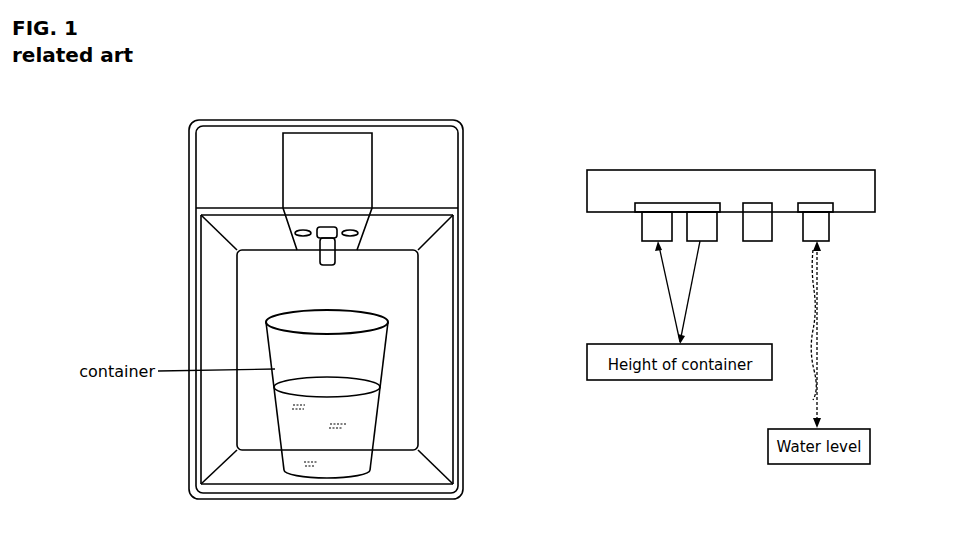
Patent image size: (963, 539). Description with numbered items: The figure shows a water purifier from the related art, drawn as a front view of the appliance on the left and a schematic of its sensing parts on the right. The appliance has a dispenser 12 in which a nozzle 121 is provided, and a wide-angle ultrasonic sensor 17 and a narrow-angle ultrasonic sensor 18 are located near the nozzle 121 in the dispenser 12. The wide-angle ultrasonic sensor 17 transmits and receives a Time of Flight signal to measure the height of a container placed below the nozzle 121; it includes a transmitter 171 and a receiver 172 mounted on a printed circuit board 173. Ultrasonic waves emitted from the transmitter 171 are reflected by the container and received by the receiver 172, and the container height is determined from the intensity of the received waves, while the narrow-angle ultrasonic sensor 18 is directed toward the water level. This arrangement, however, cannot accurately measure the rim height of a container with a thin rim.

The dispenser 12 is at (184, 321).
The wide-angle ultrasonic sensor 17 is at (358, 234).
The narrow-angle ultrasonic sensor 18 is at (295, 234).
The nozzle 121 is at (320, 263).
The transmitter 171 is at (703, 217).
The receiver 172 is at (657, 215).
The printed circuit board 173 is at (676, 208).